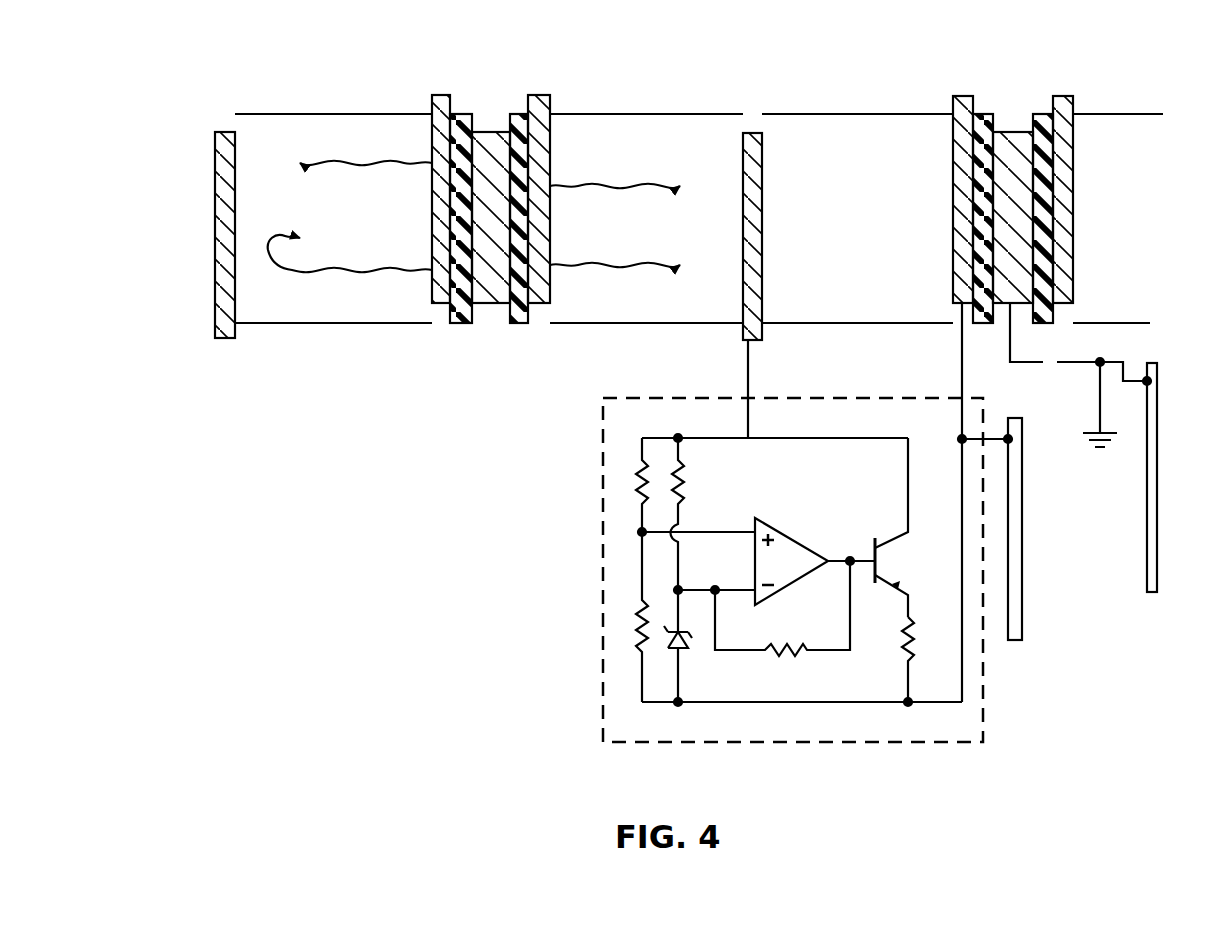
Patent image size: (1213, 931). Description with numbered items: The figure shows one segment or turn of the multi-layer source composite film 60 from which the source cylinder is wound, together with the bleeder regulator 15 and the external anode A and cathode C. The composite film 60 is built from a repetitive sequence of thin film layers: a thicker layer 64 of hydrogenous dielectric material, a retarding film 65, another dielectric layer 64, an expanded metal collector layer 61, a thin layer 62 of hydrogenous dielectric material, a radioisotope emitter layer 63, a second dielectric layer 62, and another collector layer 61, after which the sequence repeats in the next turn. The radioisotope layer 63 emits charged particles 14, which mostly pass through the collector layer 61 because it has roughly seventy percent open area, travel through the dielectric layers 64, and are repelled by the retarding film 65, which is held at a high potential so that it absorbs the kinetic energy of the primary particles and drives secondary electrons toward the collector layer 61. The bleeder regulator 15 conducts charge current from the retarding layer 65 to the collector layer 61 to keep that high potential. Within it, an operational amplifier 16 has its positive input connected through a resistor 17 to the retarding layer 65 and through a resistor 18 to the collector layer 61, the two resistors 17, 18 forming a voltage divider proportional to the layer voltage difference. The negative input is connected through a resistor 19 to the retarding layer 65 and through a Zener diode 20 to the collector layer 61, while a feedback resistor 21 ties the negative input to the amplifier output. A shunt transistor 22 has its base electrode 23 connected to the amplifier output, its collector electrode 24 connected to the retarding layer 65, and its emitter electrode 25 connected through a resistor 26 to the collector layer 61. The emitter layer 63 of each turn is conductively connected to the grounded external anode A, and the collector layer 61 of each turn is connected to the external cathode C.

The charged particles 14 is at (318, 167).
The bleeder regulator 15 is at (598, 447).
The operational amplifier 16 is at (802, 540).
The resistor 17 is at (640, 488).
The resistor 18 is at (640, 622).
The resistor 19 is at (683, 492).
The Zener diode 20 is at (686, 642).
The feedback resistor 21 is at (794, 655).
The shunt transistor 22 is at (893, 538).
The base electrode 23 is at (870, 547).
The collector electrode 24 is at (884, 563).
The emitter electrode 25 is at (894, 586).
The resistor 26 is at (915, 648).
The source composite film 60 is at (208, 222).
The collector layer 61 is at (438, 93).
The hydrogenous dielectric material layer 62 is at (460, 112).
The radioisotope layer 63 is at (490, 130).
The dielectric material layer 64 is at (340, 113).
The retarding film 65 is at (228, 130).
The external cathode C is at (1022, 538).
The external anode A is at (1157, 538).